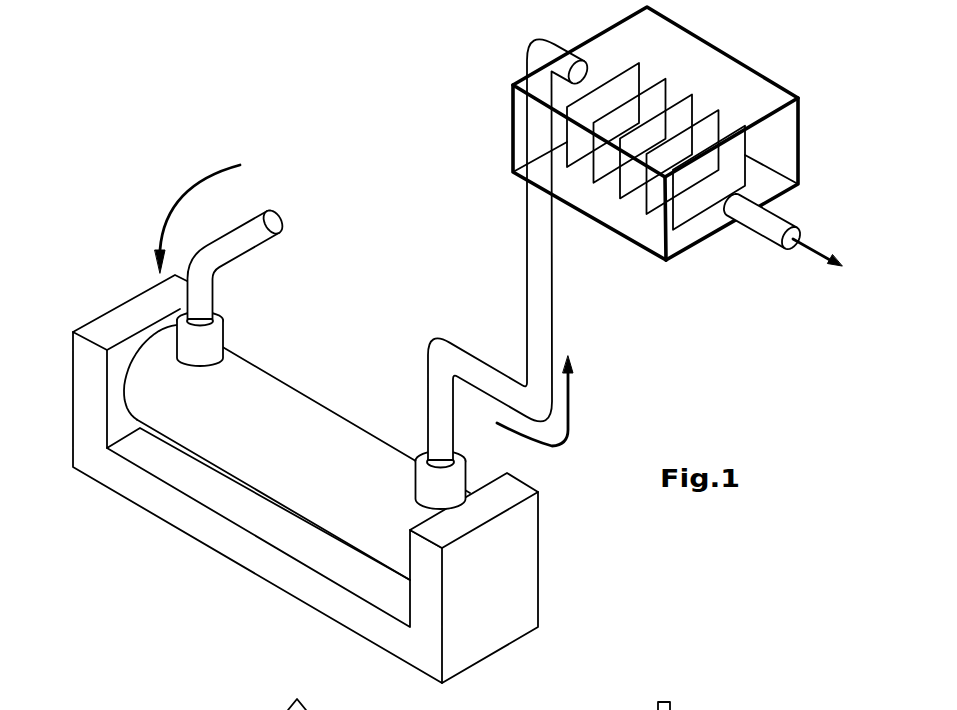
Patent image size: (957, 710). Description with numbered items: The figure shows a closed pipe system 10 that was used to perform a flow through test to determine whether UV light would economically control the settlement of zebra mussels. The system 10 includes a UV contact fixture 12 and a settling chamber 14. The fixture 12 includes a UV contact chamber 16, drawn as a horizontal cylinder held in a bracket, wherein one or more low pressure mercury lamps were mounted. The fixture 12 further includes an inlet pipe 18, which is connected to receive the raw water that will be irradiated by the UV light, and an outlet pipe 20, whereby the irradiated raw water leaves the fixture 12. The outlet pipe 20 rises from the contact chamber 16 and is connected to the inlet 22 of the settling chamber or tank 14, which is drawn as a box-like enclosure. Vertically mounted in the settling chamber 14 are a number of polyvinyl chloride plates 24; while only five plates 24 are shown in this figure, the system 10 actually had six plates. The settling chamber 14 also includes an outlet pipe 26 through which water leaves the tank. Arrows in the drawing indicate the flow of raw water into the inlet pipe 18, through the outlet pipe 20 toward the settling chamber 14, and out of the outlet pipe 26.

The closed pipe system 10 is at (392, 172).
The UV contact fixture 12 is at (518, 545).
The settling chamber 14 is at (799, 140).
The UV contact chamber 16 is at (290, 397).
The inlet pipe 18 is at (257, 237).
The outlet pipe 20 is at (539, 310).
The inlet 22 is at (580, 62).
The polyvinyl chloride plates 24 is at (722, 72).
The outlet pipe 26 is at (777, 238).